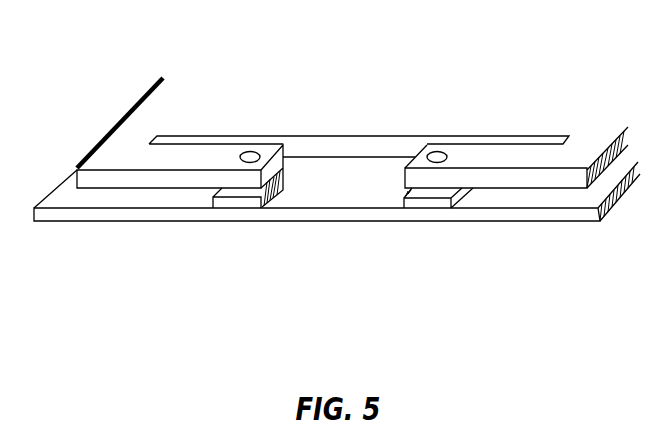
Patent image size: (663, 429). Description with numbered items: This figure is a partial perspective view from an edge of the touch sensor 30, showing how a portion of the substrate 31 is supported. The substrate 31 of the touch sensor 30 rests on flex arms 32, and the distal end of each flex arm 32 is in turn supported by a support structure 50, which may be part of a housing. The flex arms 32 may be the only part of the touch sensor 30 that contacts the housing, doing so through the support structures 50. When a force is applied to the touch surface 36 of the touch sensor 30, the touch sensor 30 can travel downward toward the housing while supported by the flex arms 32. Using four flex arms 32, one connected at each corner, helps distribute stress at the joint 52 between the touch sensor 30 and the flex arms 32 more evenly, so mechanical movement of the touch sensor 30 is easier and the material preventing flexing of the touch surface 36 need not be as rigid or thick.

The touch sensor 30 is at (139, 73).
The substrate 31 is at (107, 159).
The flex arm 32 is at (159, 182).
The touch surface 36 is at (211, 81).
The support structure 50 is at (229, 203).
The joint 52 is at (129, 136).